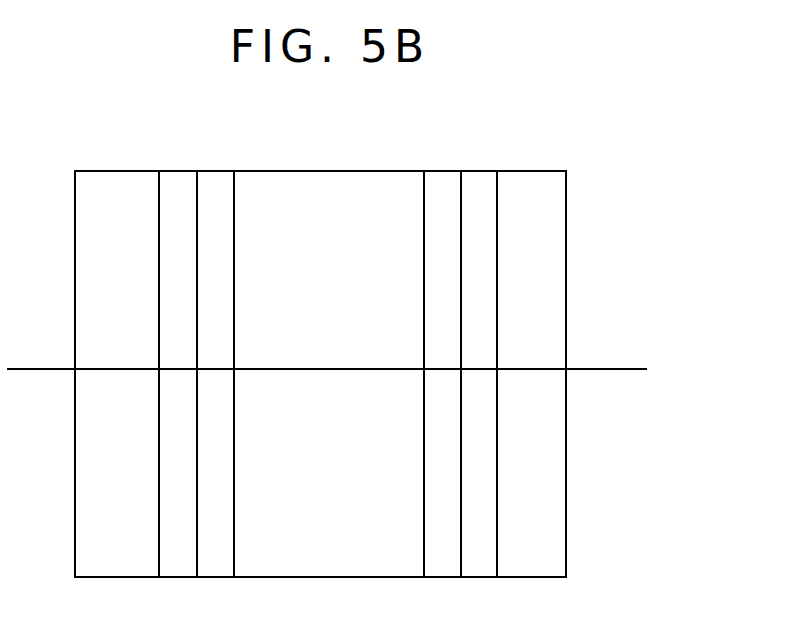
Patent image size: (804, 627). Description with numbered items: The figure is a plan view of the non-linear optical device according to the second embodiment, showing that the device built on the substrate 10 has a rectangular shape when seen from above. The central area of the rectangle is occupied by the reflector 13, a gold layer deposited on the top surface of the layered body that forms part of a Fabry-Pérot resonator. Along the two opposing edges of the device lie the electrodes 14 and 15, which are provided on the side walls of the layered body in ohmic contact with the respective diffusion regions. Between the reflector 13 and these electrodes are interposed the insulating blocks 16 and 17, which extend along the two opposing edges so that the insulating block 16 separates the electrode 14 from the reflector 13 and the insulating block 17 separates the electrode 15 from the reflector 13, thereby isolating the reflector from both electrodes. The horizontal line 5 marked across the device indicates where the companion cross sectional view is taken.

The substrate 10 is at (571, 269).
The reflector 13 is at (378, 185).
The electrode 14 is at (122, 182).
The electrode 15 is at (477, 185).
The insulating block 16 is at (219, 183).
The insulating block 17 is at (443, 183).
The line 5—5' 5 is at (42, 372).